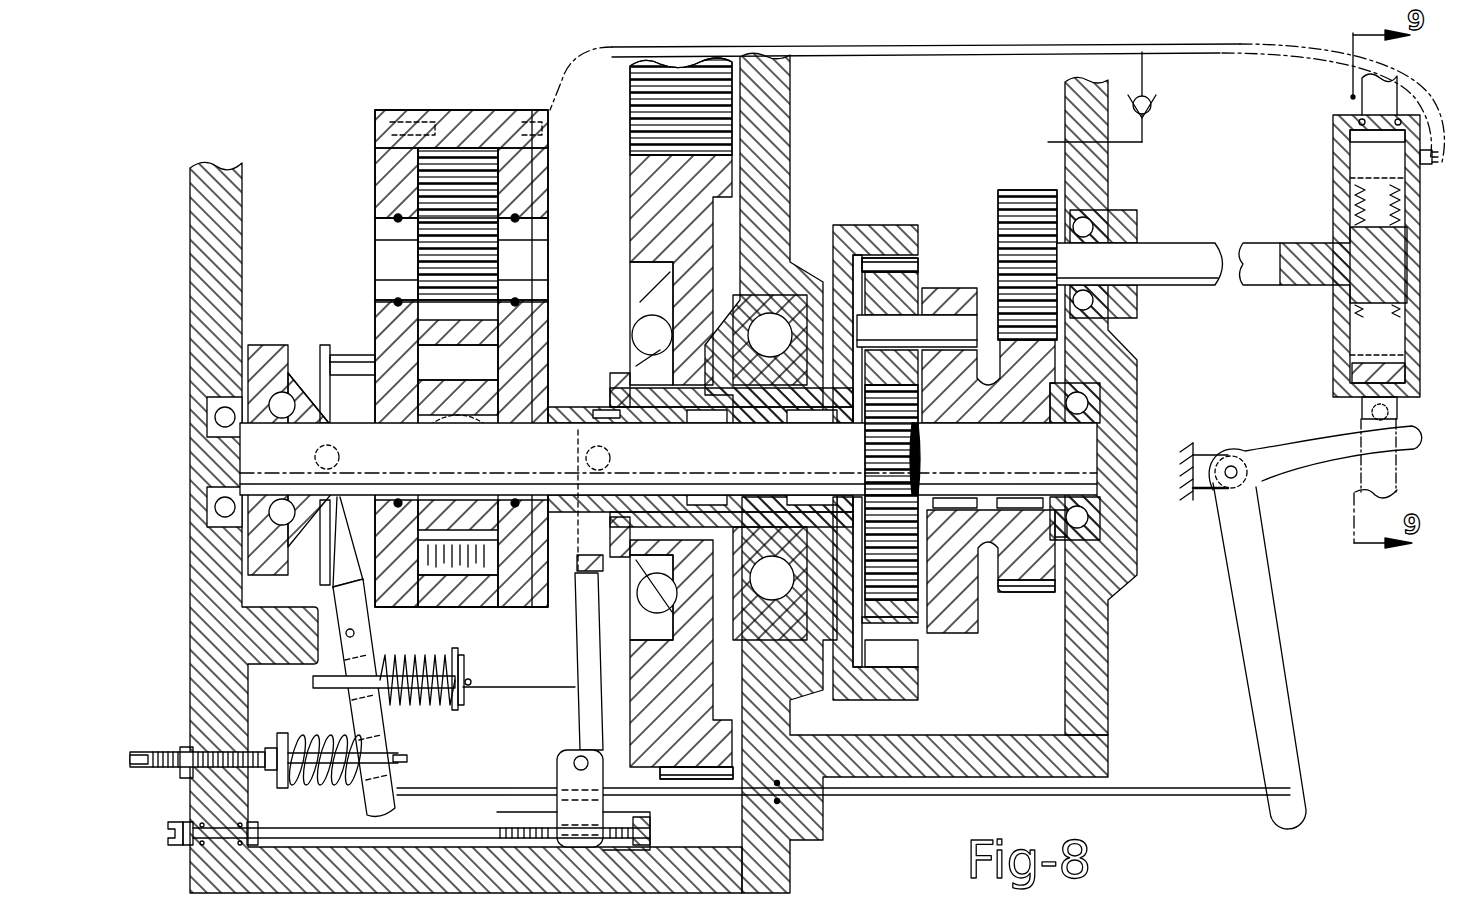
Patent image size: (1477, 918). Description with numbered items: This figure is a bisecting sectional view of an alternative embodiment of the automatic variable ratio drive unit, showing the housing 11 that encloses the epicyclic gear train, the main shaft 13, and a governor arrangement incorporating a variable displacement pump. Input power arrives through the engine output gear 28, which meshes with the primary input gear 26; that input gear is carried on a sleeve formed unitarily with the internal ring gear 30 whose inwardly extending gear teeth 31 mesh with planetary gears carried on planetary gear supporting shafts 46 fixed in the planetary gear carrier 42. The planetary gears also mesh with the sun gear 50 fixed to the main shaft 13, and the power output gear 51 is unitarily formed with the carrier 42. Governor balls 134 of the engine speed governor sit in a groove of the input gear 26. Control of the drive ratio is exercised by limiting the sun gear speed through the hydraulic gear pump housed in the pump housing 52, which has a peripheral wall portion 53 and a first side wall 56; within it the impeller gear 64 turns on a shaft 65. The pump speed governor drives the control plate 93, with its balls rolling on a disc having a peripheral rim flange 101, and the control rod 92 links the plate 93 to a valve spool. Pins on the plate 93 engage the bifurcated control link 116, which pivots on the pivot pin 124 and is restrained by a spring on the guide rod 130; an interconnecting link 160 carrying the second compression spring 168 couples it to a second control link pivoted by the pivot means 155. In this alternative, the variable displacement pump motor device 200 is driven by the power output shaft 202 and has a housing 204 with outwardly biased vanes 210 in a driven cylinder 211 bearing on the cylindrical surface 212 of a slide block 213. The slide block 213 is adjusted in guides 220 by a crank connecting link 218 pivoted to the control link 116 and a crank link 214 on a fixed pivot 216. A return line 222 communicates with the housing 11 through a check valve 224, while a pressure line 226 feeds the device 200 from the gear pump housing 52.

The housing 11 is at (190, 218).
The main shaft 13 is at (668, 496).
The primary input gear 26 is at (630, 200).
The engine output gear 28 is at (698, 72).
The internal ring gear 30 is at (918, 238).
The gear teeth 31 is at (905, 665).
The planetary gear carrier 42 is at (950, 300).
The planetary gear supporting shafts 46 is at (917, 331).
The sun gear 50 is at (915, 452).
The power output gear 51 is at (1026, 192).
The pump housing 52 is at (453, 359).
The peripheral wall portion 53 is at (475, 612).
The first side wall 56 is at (375, 185).
The impeller gear 64 is at (480, 178).
The shaft 65 is at (500, 262).
The control rod 92 is at (352, 381).
The control plate 93 is at (330, 345).
The peripheral rim flange 101 is at (290, 345).
The bifurcated control link 116 is at (350, 722).
The pivot pin 124 is at (360, 634).
The guide rod 130 is at (407, 760).
The governor balls 134 is at (640, 333).
The pivot means 155 is at (562, 760).
The interconnecting link 160 is at (535, 676).
The second compression spring 168 is at (435, 712).
The variable displacement pump motor device 200 is at (1355, 267).
The power output shaft 202 is at (1195, 243).
The housing 204 is at (1414, 360).
The vanes 210 is at (1408, 330).
The driven cylinder 211 is at (1407, 280).
The cylindrical surface 212 is at (1335, 146).
The slide block 213 is at (1405, 394).
The crank link 214 is at (1290, 688).
The fixed pivot 216 is at (1232, 462).
The crank connecting link 218 is at (1065, 797).
The guides 220 is at (1395, 482).
The return line 222 is at (1184, 58).
The check valve 224 is at (1152, 108).
The pressure line 226 is at (1441, 182).